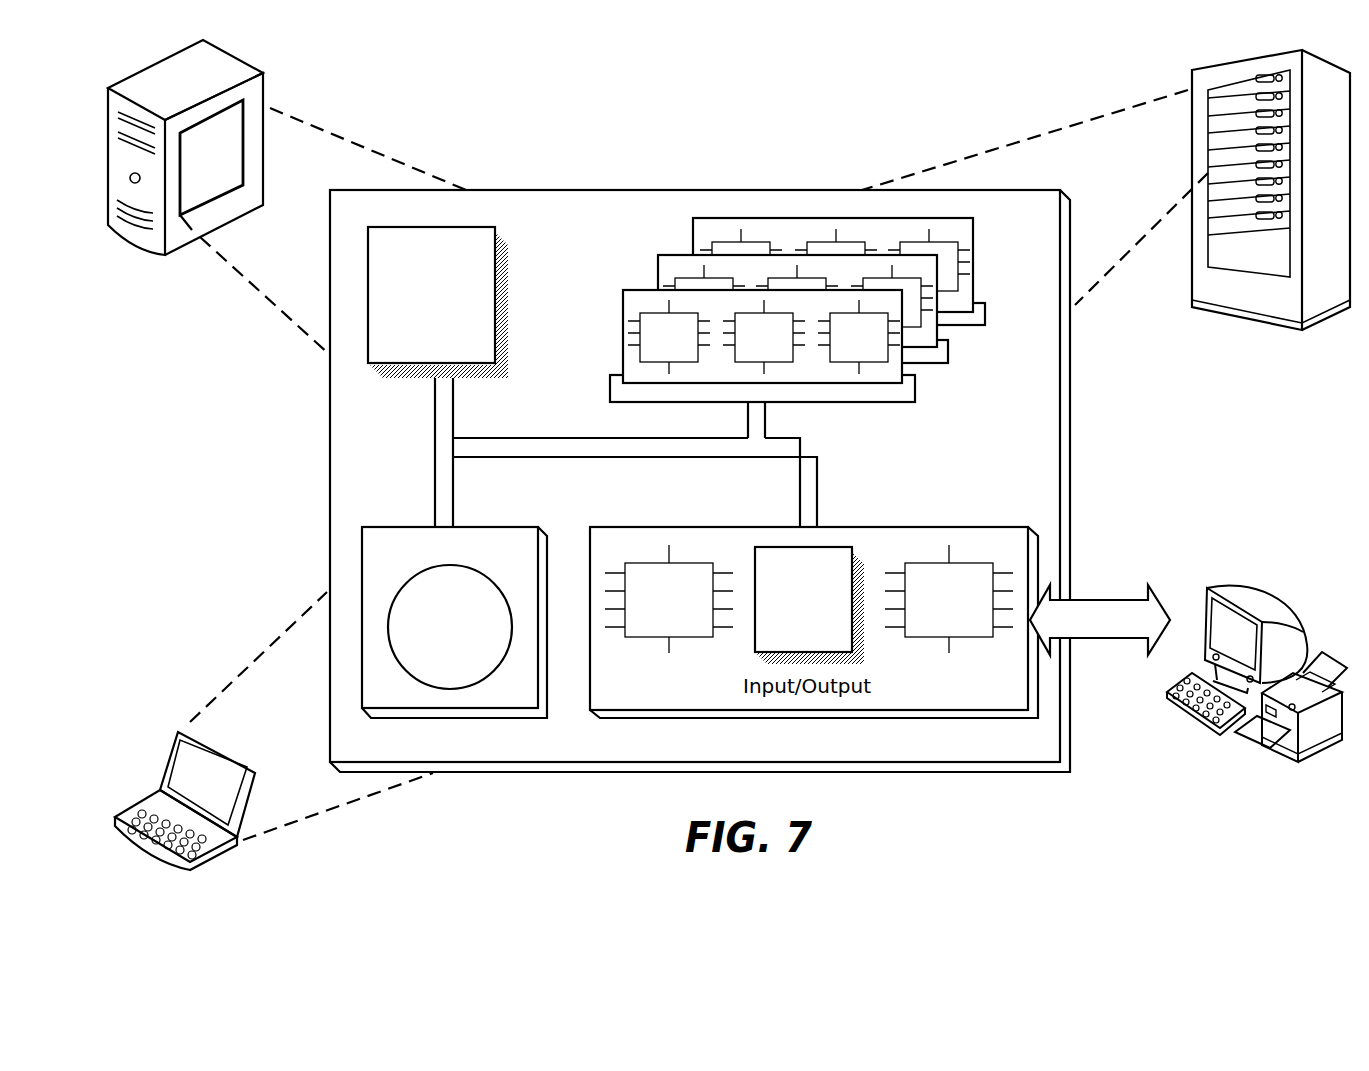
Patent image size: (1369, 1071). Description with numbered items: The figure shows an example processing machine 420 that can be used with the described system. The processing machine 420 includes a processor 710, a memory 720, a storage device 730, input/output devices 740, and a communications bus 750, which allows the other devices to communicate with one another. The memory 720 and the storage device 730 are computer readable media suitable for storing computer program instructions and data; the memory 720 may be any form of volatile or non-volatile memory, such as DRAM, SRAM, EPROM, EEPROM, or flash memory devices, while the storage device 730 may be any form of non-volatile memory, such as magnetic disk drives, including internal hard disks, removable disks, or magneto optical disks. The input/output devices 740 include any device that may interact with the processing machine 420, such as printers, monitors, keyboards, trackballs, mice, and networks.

The processing machine 420 is at (448, 88).
The processor 710 is at (477, 227).
The memory 720 is at (968, 350).
The storage device 730 is at (362, 565).
The input/output devices 740 is at (1205, 590).
The communications bus 750 is at (615, 457).